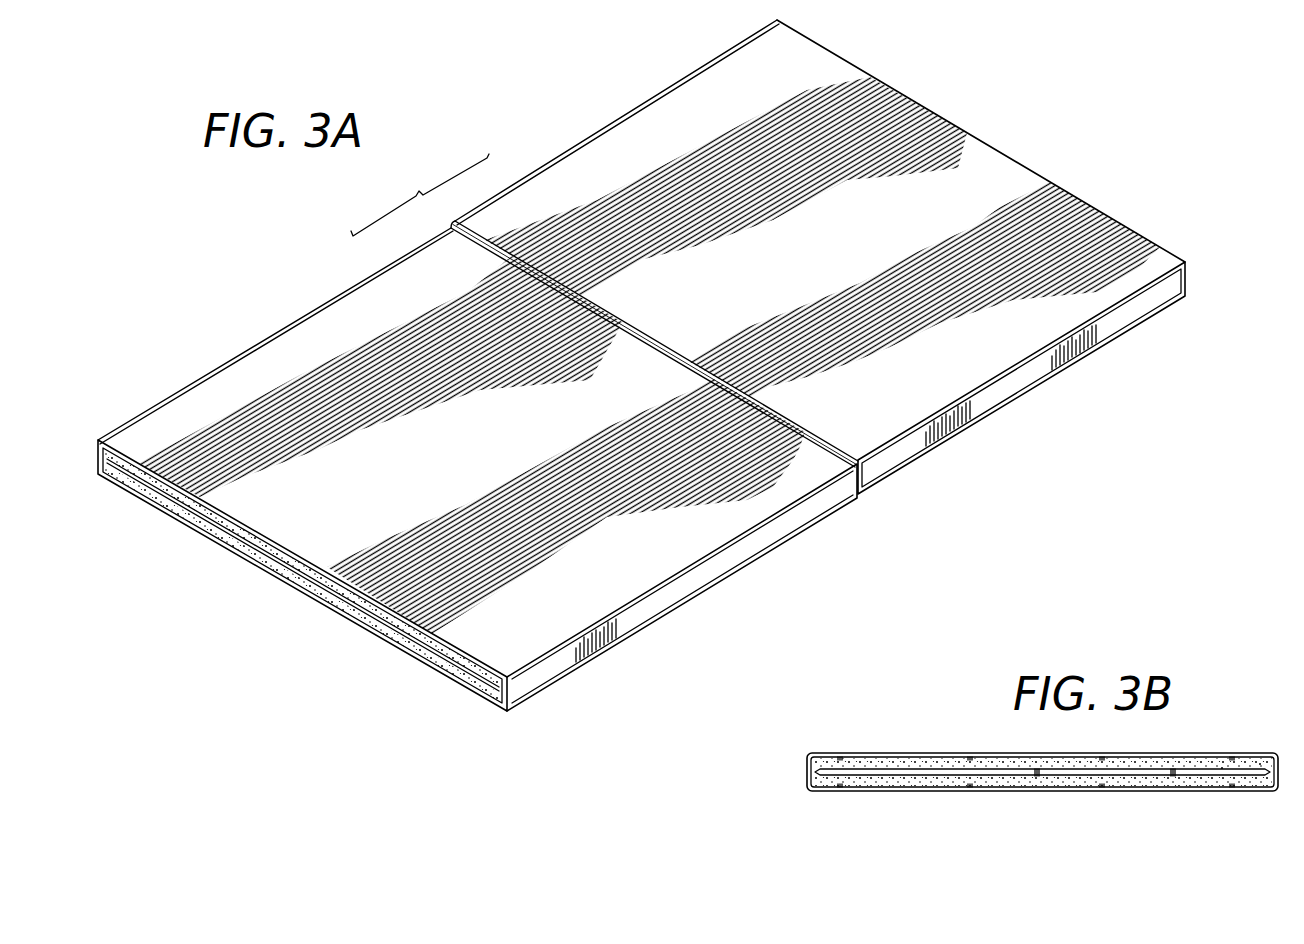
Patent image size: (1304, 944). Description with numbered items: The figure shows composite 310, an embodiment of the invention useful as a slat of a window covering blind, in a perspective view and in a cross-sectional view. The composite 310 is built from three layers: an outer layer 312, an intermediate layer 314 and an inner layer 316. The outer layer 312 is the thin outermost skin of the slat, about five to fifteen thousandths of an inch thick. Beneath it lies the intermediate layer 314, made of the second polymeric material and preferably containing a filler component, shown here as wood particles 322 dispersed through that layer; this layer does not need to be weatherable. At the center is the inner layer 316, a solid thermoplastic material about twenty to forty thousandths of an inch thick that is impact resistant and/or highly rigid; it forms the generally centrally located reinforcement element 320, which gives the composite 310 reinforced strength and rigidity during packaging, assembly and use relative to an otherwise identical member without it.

In FIG. 3A, the composite 310 is at (1026, 112).
In FIG. 3A, the outer layer 312 is at (438, 491).
In FIG. 3B, the outer layer 312 is at (855, 792).
In FIG. 3A, the intermediate layer 314 is at (275, 556).
In FIG. 3B, the intermediate layer 314 is at (883, 765).
In FIG. 3A, the inner layer 316 is at (373, 617).
In FIG. 3B, the inner layer 316 is at (982, 775).
In FIG. 3A, the reinforcement element 320 is at (310, 578).
In FIG. 3B, the reinforcement element 320 is at (1055, 778).
In FIG. 3B, the wood particles 322 is at (1260, 762).